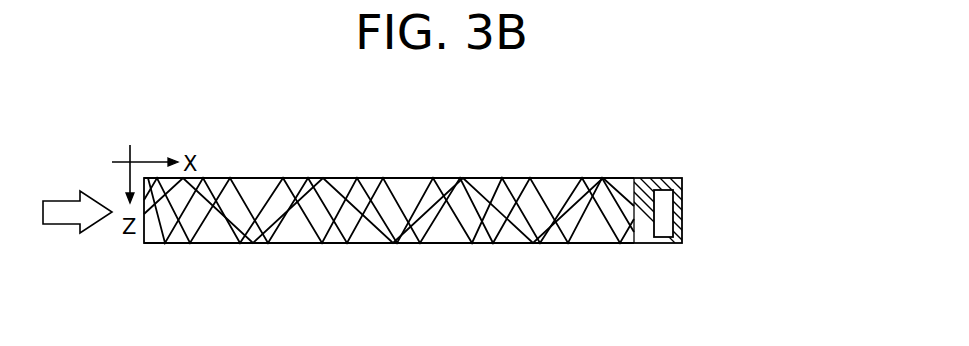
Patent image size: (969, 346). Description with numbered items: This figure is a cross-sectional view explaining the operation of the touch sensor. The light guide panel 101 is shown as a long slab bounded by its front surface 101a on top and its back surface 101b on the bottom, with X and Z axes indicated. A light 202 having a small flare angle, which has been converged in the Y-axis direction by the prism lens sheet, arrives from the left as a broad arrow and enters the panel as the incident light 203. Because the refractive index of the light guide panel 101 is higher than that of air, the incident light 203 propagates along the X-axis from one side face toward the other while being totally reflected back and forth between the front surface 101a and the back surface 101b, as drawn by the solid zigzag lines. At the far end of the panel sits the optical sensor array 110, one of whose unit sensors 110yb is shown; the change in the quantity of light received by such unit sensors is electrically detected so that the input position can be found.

The light guide panel 101 is at (418, 177).
The front surface 101a is at (318, 177).
The back surface 101b is at (300, 243).
The optical sensor array 110 is at (648, 178).
The unit sensor 110yb is at (683, 203).
The light having a small flare angle 202 is at (93, 226).
The incident light 203 is at (442, 243).